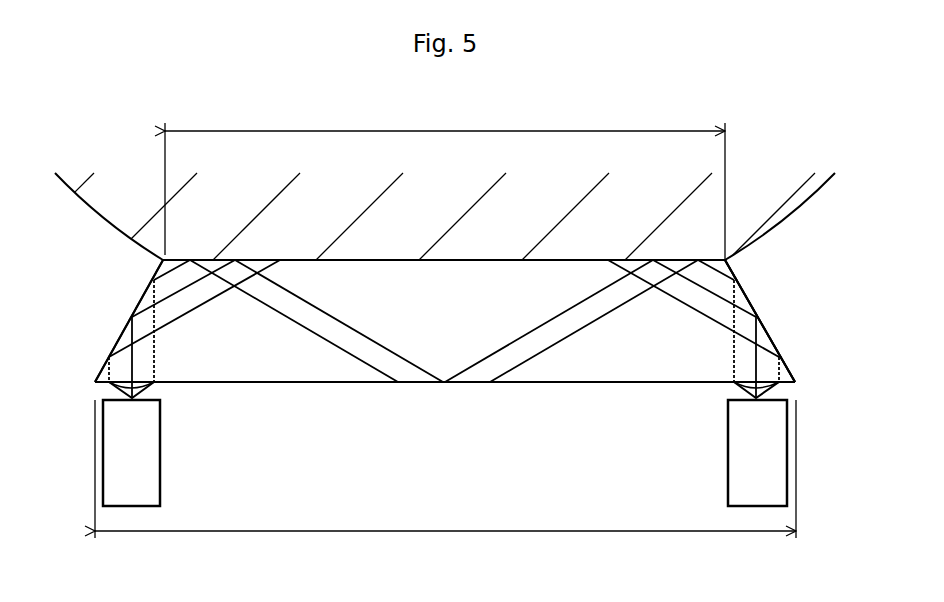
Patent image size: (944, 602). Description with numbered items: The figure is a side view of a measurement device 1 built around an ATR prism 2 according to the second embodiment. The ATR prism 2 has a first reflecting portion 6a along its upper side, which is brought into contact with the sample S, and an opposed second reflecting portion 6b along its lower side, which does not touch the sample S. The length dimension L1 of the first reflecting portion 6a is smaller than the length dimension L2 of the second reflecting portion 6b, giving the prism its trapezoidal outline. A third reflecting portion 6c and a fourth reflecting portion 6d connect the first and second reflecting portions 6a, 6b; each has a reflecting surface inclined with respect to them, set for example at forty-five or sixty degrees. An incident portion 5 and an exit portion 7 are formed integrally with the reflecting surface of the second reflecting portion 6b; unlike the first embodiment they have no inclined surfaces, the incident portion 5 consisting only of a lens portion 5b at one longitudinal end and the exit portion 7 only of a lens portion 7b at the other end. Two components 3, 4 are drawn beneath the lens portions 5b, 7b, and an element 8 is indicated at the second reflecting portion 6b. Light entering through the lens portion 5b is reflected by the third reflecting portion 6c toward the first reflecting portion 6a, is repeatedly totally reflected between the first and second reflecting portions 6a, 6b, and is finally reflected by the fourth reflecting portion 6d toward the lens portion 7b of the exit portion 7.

The light guide 1 is at (77, 273).
The ATR prism 2 is at (770, 305).
The first light source 3 is at (163, 452).
The second light source 4 is at (727, 458).
The incident portion 5 is at (105, 392).
The lens portion 5b is at (146, 391).
The first reflecting portion 6a is at (376, 260).
The second reflecting portion 6b is at (371, 382).
The third reflecting portion 6c is at (126, 330).
The fourth reflecting portion 6d is at (772, 332).
The exit portion 7 is at (787, 391).
The lens portion 7b is at (745, 390).
The reflected light rays 8 is at (586, 382).
The sample S is at (817, 223).
The length dimension of the first reflecting portion L1 is at (445, 183).
The length dimension of the second reflecting portion L2 is at (445, 469).